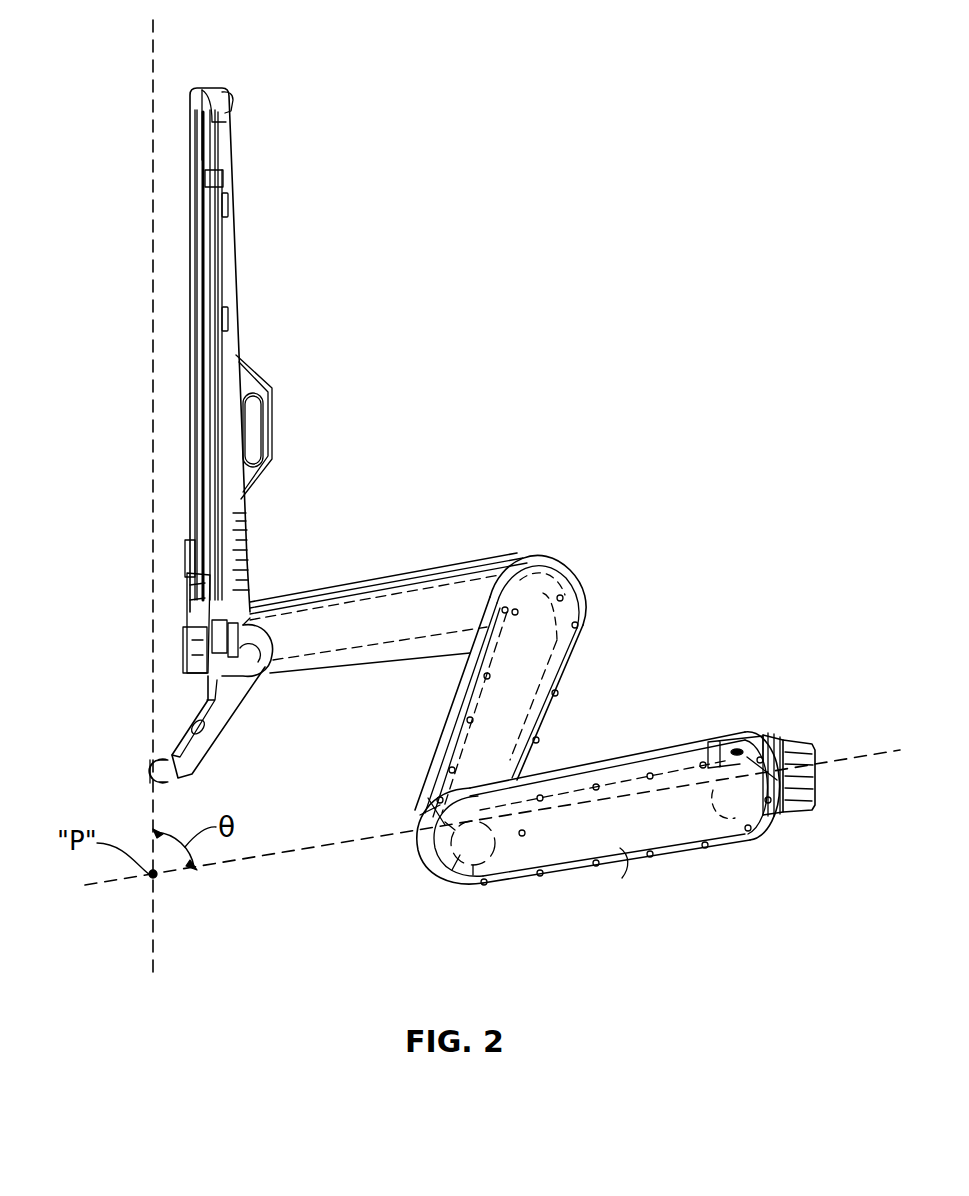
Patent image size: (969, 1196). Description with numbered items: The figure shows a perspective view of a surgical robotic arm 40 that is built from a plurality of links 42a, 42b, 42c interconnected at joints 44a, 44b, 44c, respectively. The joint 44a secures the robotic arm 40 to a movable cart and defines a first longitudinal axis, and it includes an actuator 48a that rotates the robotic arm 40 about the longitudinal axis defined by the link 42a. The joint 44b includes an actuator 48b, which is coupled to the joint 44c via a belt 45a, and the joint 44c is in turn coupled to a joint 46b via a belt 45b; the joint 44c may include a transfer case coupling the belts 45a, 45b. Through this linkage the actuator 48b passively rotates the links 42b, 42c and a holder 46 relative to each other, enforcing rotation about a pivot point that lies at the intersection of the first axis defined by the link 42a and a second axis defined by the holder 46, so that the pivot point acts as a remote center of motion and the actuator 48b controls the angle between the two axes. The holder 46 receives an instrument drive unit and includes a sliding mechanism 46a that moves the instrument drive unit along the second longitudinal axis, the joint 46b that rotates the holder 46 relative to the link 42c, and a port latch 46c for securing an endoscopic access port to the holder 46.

The robotic arm 40 is at (263, 36).
The holder 46 is at (220, 147).
The sliding mechanism 46a is at (195, 293).
The joint 46b is at (243, 630).
The port latch 46c is at (142, 768).
The link 42c is at (345, 586).
The belt 45b is at (462, 582).
The joint 44c is at (560, 603).
The link 42b is at (510, 742).
The belt 45a is at (553, 645).
The joint 44b is at (467, 883).
The actuator 48b is at (430, 850).
The link 42a is at (630, 858).
The joint 44a is at (808, 803).
The actuator 48a is at (783, 737).